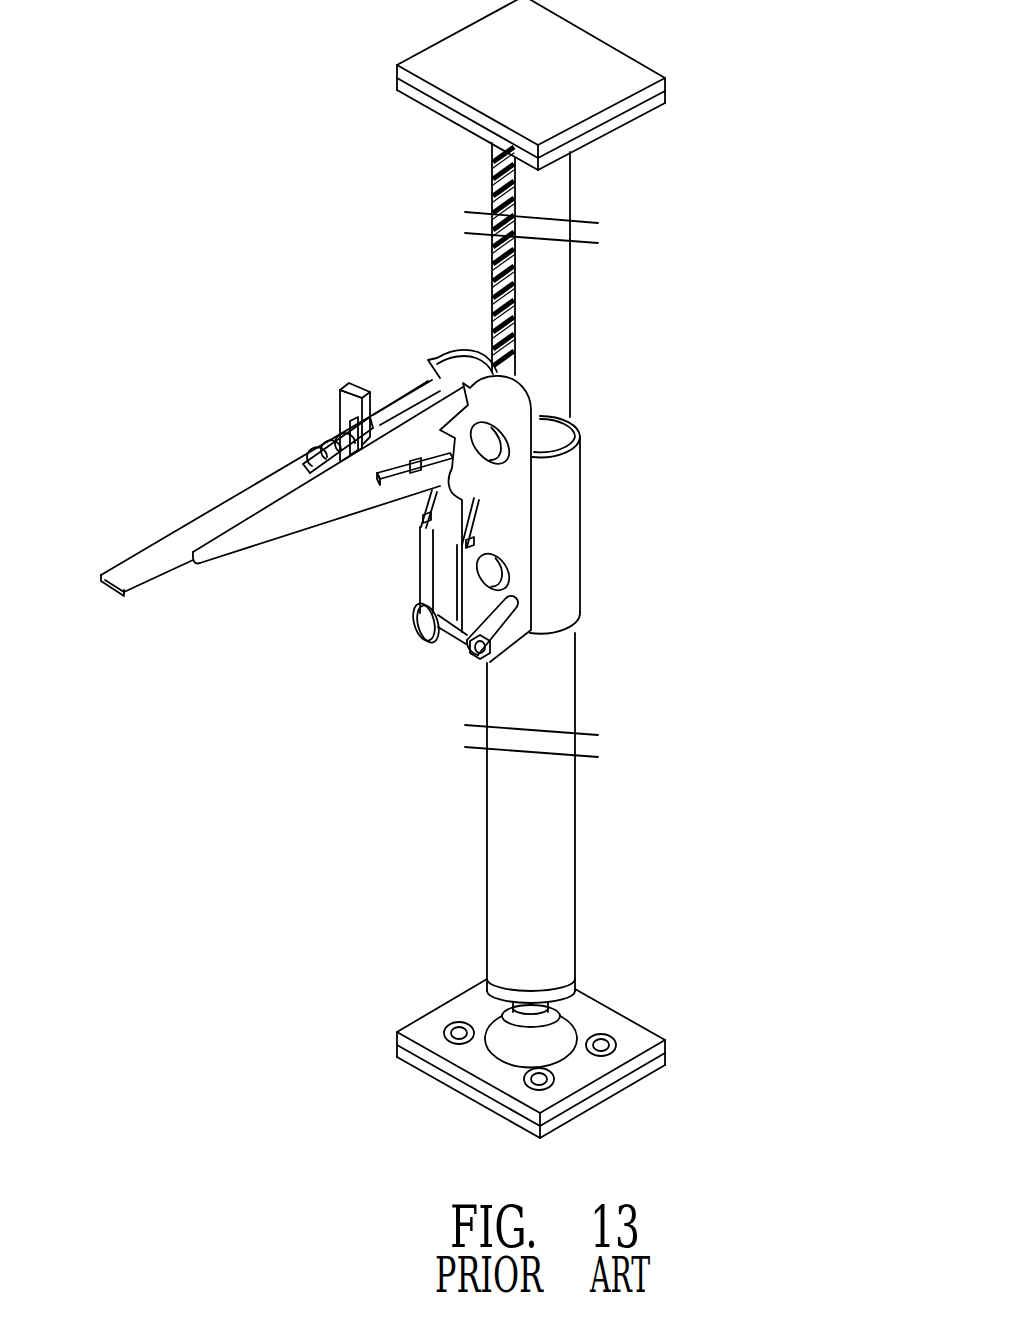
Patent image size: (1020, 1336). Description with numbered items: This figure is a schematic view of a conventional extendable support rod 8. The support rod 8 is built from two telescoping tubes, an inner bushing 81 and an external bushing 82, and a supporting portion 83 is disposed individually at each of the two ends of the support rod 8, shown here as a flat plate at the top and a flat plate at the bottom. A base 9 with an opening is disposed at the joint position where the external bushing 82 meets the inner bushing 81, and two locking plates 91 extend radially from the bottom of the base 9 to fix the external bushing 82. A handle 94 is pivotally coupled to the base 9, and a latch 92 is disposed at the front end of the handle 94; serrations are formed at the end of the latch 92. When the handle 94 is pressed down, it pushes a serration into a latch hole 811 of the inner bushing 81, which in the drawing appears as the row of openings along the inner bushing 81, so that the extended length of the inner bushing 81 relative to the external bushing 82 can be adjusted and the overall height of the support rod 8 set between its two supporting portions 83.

The support rod 8 is at (603, 343).
The inner bushing 81 is at (570, 383).
The latch hole 811 is at (492, 263).
The external bushing 82 is at (567, 683).
The supporting portion 83 is at (620, 63).
The base 9 is at (575, 500).
The locking plate 91 is at (508, 640).
The latch 92 is at (320, 410).
The handle 94 is at (203, 533).